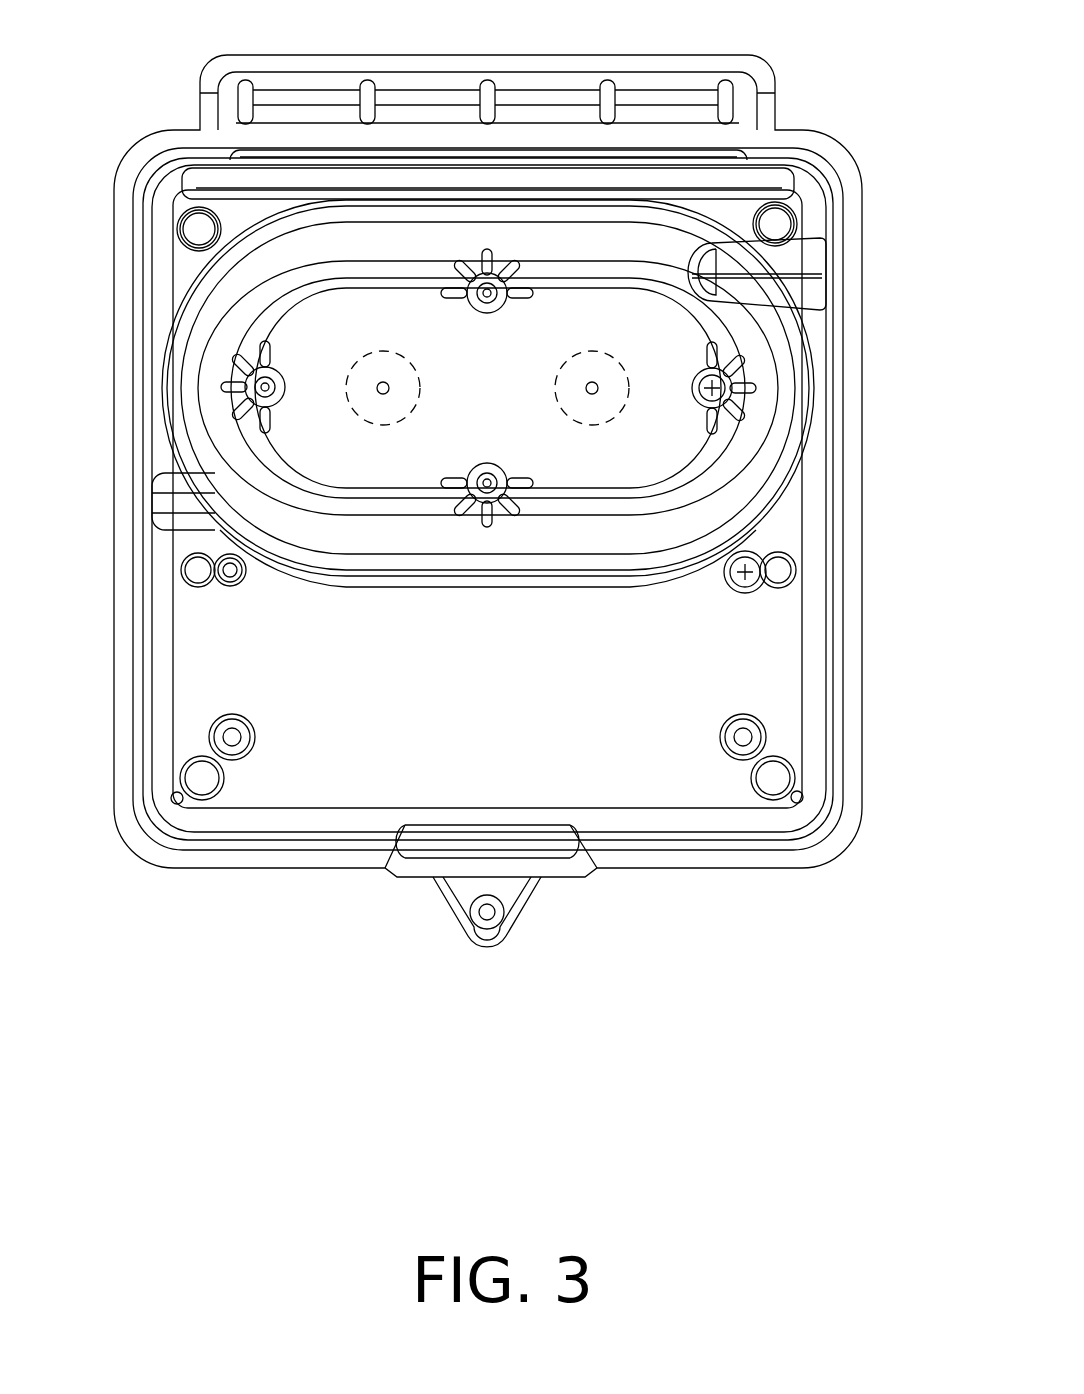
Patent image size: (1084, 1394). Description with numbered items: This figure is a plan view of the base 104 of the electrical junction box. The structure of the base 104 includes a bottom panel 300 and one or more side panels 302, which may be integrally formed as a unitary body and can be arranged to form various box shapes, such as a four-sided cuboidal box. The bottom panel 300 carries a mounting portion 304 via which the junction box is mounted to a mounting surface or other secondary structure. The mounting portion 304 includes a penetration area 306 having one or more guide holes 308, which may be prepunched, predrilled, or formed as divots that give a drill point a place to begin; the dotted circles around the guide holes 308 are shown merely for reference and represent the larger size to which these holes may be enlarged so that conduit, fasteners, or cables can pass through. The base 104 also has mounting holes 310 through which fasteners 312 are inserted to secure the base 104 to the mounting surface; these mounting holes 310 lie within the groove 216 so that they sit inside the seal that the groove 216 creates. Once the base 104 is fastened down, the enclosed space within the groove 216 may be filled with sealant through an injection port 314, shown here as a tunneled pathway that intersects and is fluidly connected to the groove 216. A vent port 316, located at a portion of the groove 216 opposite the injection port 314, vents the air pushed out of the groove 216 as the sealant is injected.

The base 104 is at (172, 103).
The groove 216 is at (198, 332).
The bottom panel 300 is at (320, 765).
The side panels 302 is at (114, 780).
The mounting portion 304 is at (793, 527).
The penetration area 306 is at (320, 452).
The guide holes 308 is at (598, 387).
The mounting holes 310 is at (495, 277).
The fasteners 312 is at (726, 388).
The injection port 314 is at (808, 262).
The vent port 316 is at (172, 503).